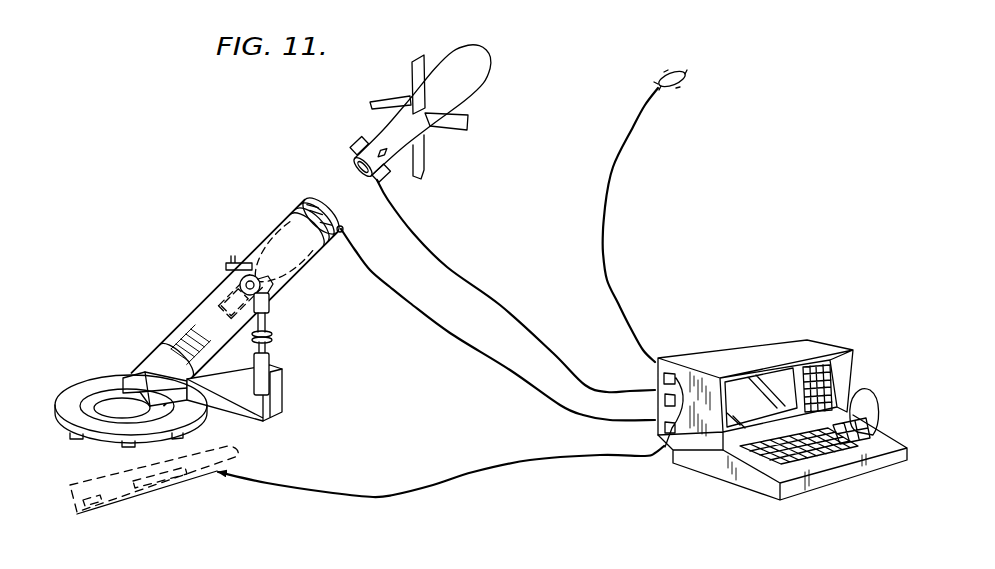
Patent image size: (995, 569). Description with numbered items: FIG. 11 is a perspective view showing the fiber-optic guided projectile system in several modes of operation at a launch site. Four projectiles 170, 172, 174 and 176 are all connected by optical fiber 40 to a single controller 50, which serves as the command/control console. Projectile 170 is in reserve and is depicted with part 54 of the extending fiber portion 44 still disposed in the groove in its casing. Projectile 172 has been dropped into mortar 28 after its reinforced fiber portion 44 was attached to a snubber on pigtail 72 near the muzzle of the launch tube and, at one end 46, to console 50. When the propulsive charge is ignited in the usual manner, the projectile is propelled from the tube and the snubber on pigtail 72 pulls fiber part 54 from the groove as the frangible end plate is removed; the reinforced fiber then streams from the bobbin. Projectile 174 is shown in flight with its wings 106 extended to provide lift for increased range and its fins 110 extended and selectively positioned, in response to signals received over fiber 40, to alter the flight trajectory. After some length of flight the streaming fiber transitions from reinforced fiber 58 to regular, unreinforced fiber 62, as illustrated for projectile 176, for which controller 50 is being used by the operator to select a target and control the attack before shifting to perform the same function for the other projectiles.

The mortar 28 is at (200, 318).
The optical fiber 40 is at (600, 222).
The extending fiber portion 44 is at (420, 311).
The one end 46 is at (666, 455).
The controller 50 is at (836, 489).
The fiber part 54 is at (202, 481).
The reinforced fiber 58 is at (620, 186).
The regular fiber 62 is at (632, 121).
The pigtail 72 is at (350, 212).
The wings 106 is at (412, 70).
The fins 110 is at (355, 138).
The projectile 170 is at (104, 476).
The projectile 172 is at (286, 221).
The projectile 174 is at (458, 55).
The projectile 176 is at (657, 72).